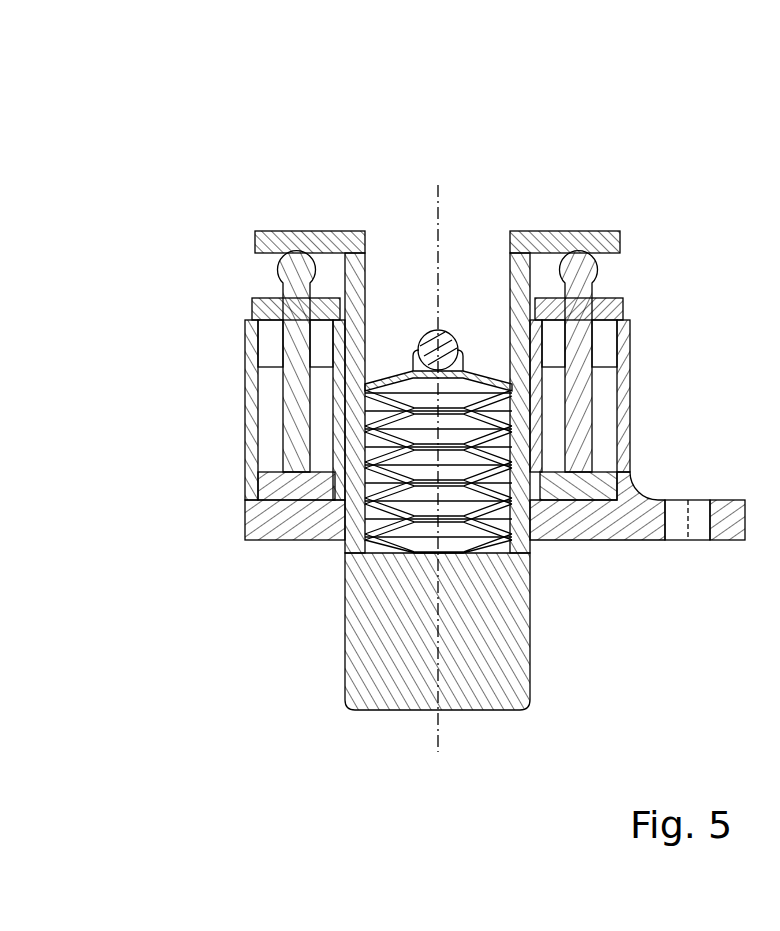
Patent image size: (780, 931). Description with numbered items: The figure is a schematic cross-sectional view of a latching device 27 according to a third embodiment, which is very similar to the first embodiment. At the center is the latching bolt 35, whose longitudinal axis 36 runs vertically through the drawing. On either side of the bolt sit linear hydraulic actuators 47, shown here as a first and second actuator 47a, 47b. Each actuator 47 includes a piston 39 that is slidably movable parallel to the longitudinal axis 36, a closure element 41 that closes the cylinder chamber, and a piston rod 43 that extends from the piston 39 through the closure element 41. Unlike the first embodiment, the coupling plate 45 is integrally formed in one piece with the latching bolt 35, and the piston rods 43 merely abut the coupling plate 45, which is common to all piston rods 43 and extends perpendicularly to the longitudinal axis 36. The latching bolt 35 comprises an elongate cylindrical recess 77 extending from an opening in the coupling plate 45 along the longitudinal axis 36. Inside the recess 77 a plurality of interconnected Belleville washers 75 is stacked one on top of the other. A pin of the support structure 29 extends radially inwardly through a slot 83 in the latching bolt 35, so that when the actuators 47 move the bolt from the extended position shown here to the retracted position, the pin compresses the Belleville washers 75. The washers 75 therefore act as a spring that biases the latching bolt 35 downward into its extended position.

The latching device 27 is at (298, 128).
The support structure 29 is at (618, 535).
The latching bolt 35 is at (494, 620).
The longitudinal axis 36 is at (437, 748).
The piston 39 is at (274, 491).
The closure element 41 is at (275, 305).
The piston rod 43 is at (293, 400).
The coupling plate 45 is at (270, 231).
The linear hydraulic actuator 47 is at (395, 395).
The linear hydraulic actuator 47a is at (242, 432).
The linear hydraulic actuator 47b is at (632, 402).
The Belleville washers 75 is at (383, 541).
The elongate cylindrical recess 77 is at (405, 266).
The slot 83 is at (460, 362).